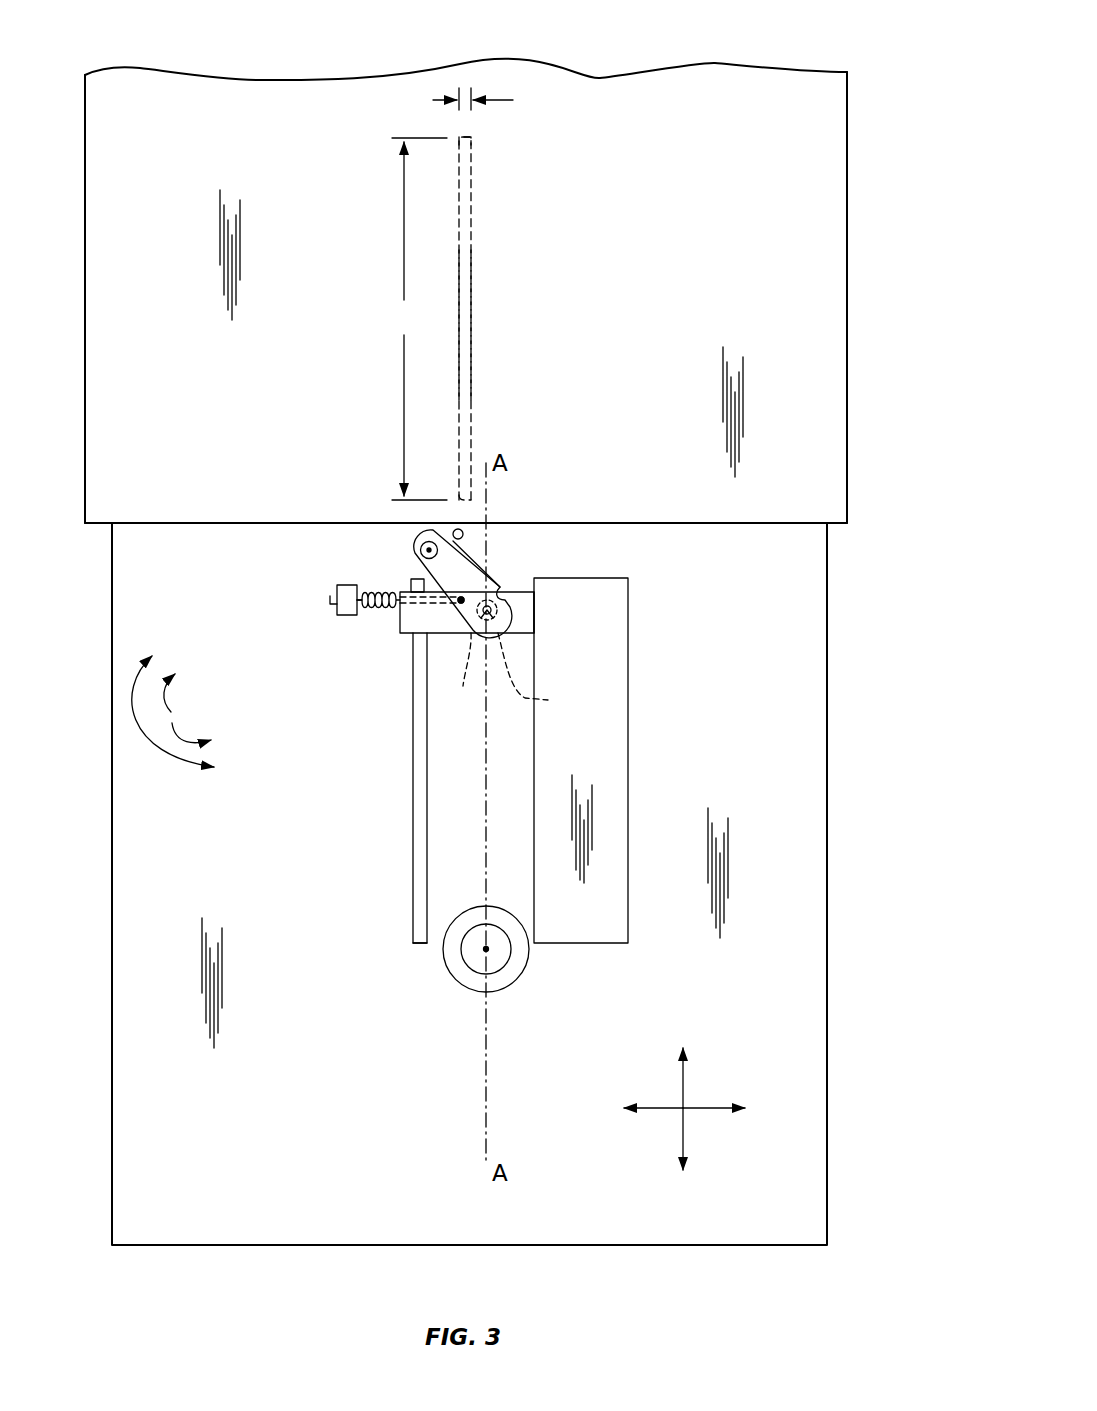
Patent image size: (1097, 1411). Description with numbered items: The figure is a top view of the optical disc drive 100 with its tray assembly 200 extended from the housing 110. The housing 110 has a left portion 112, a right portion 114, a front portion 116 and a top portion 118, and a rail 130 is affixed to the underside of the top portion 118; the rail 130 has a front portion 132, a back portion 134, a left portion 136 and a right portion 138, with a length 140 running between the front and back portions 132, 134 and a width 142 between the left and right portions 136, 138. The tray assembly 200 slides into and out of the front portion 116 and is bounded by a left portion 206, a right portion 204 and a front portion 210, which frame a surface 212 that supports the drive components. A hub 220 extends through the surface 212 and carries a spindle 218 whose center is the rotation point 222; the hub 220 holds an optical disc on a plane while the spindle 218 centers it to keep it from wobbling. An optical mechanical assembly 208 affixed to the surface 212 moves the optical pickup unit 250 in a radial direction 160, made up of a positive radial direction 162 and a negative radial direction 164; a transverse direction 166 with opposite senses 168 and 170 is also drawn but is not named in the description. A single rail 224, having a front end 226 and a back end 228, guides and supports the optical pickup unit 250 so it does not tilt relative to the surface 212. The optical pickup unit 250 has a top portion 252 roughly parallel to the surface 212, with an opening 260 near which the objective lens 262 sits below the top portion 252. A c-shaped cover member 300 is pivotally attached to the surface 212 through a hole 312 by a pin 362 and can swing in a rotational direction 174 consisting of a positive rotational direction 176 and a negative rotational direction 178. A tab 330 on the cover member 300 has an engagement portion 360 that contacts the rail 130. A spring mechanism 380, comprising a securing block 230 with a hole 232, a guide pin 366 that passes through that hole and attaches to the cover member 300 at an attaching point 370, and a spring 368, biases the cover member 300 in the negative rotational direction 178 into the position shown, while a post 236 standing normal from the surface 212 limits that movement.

The optical disc drive 100 is at (656, 48).
The housing 110 is at (847, 185).
The left portion 112 is at (78, 310).
The right portion 114 is at (847, 408).
The front portion 116 is at (192, 525).
The top portion 118 is at (686, 297).
The rail 130 is at (477, 227).
The front portion 132 is at (476, 512).
The back portion 134 is at (466, 137).
The left portion 136 is at (457, 340).
The right portion 138 is at (473, 320).
The length 140 is at (416, 319).
The width 142 is at (433, 100).
The radial direction 160 is at (670, 1074).
The positive radial direction 162 is at (685, 1077).
The negative radial direction 164 is at (682, 1143).
The horizontal arrow 166 is at (719, 1097).
The leftward direction 168 is at (652, 1109).
The rightward direction 170 is at (714, 1109).
The rotational direction 174 is at (176, 765).
The positive rotational direction 176 is at (173, 703).
The negative rotational direction 178 is at (180, 725).
The tray assembly 200 is at (827, 703).
The right portion 204 is at (827, 918).
The left portion 206 is at (112, 985).
The optical mechanical assembly 208 is at (634, 760).
The front portion 210 is at (694, 1247).
The surface 212 is at (305, 1112).
The spindle 218 is at (470, 968).
The hub 220 is at (503, 988).
The rotation point 222 is at (486, 949).
The rail 224 is at (413, 792).
The front end 226 is at (420, 943).
The back end 228 is at (413, 582).
The securing block 230 is at (362, 612).
The hole 232 is at (400, 597).
The post 236 is at (464, 535).
The optical pickup unit 250 is at (513, 643).
The top portion 252 is at (525, 621).
The opening 260 is at (550, 674).
The objective lens 262 is at (459, 670).
The cover member 300 is at (581, 506).
The hole 312 is at (418, 544).
The tab 330 is at (508, 600).
The engagement portion 360 is at (498, 576).
The pin 362 is at (429, 550).
The guide pin 366 is at (330, 600).
The spring 368 is at (372, 610).
The attaching point 370 is at (461, 603).
The spring mechanism 380 is at (327, 650).